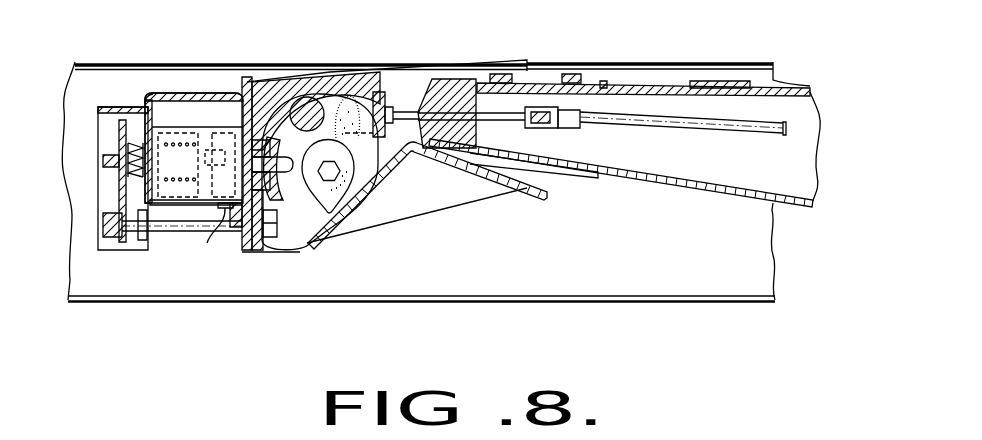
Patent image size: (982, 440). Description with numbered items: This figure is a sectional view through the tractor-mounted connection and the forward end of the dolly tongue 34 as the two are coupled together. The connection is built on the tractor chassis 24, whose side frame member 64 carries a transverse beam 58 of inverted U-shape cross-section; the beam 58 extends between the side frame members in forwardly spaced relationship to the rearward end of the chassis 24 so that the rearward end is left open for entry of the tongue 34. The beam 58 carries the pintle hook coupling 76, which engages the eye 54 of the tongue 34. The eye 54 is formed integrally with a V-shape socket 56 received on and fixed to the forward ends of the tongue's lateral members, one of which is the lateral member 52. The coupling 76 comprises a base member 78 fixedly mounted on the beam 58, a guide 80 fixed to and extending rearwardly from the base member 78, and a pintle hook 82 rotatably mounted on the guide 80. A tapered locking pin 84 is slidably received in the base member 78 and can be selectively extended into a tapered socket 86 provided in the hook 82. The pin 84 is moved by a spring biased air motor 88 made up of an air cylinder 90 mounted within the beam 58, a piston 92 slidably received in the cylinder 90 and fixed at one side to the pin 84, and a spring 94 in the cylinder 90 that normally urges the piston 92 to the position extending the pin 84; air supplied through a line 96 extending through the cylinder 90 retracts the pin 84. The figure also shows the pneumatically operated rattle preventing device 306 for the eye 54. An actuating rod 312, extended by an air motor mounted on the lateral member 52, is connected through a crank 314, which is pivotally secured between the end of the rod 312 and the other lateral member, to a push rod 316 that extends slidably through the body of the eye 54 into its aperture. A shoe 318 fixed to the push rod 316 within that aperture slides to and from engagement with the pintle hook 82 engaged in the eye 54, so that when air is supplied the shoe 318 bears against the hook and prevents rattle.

The chassis 24 is at (88, 60).
The tongue 34 is at (815, 85).
The lateral member 52 is at (795, 182).
The eye 54 is at (308, 102).
The V-shape socket 56 is at (547, 82).
The transverse beam 58 is at (168, 95).
The side frame member 64 is at (507, 280).
The pintle hook coupling 76 is at (234, 310).
The base member 78 is at (272, 88).
The guide 80 is at (510, 177).
The pintle hook 82 is at (355, 208).
The tapered locking pin 84 is at (252, 78).
The tapered socket 86 is at (287, 250).
The spring biased air motor 88 is at (170, 212).
The air cylinder 90 is at (150, 97).
The piston 92 is at (224, 128).
The spring 94 is at (170, 177).
The line 96 is at (207, 243).
The rattle preventing device 306 is at (794, 120).
The actuating rod 312 is at (663, 126).
The crank 314 is at (558, 124).
The push rod 316 is at (422, 112).
The shoe 318 is at (376, 91).